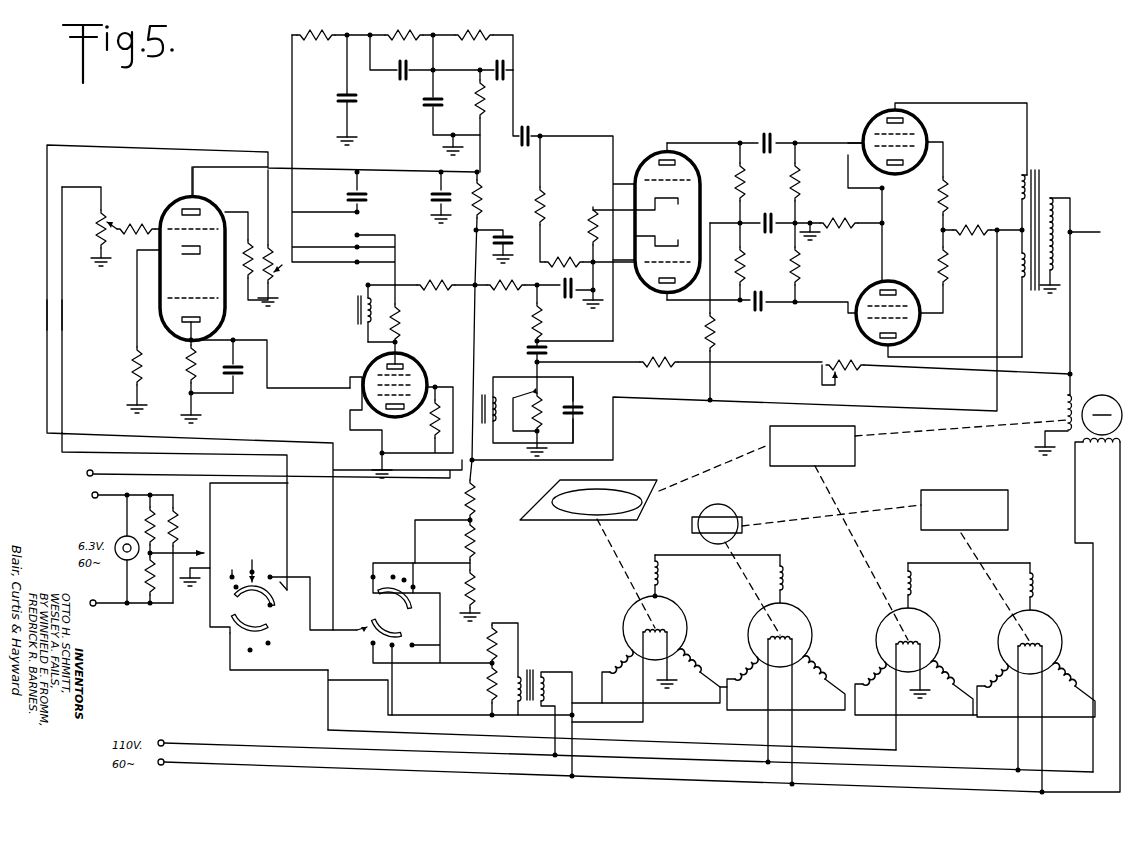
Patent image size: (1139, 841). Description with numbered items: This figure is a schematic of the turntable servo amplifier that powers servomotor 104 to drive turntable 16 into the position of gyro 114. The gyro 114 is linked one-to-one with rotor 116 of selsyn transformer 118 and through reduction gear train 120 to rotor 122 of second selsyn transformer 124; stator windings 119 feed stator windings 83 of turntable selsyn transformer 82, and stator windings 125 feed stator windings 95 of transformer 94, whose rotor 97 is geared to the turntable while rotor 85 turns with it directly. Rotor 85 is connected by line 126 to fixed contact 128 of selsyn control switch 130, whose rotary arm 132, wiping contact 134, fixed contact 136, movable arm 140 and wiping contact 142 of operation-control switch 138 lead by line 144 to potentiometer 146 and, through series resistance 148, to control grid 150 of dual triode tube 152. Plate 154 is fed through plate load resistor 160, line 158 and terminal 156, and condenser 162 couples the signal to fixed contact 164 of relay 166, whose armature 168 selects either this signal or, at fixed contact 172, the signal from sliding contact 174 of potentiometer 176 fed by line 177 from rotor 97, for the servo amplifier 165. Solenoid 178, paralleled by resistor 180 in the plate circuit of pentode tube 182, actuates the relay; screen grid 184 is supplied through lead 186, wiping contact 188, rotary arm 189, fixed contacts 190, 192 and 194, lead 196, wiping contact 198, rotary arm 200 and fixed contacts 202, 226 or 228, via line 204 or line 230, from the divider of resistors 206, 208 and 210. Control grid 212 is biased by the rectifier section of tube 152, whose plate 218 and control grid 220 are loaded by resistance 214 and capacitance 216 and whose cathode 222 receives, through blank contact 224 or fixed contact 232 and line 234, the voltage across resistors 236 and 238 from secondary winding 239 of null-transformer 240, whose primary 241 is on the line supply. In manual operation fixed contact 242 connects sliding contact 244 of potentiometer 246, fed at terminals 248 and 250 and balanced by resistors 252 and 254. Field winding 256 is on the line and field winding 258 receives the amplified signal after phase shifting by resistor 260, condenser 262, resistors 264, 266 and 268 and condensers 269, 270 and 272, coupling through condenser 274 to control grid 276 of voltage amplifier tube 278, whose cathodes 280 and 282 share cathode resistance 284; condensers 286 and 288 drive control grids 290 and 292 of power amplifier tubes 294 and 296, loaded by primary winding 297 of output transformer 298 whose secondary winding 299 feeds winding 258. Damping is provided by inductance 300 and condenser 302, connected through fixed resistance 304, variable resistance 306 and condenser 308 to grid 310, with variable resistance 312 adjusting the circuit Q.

The turntable 16 is at (625, 480).
The 1:1 turntable selsyn transformer 82 is at (670, 604).
The stator windings 83 is at (660, 581).
The rotor 85 is at (668, 631).
The 36:1 turntable selsyn transformer 94 is at (927, 612).
The stator windings 95 is at (913, 584).
The rotor 97 is at (928, 635).
The servomotor 104 is at (1104, 392).
The gyro 114 is at (727, 508).
The rotor 116 is at (795, 633).
The selsyn transformer 118 is at (856, 460).
The stator windings 119 is at (787, 581).
The reduction gear train 120 is at (980, 488).
The rotor 122 is at (1036, 633).
The second selsyn transformer 124 is at (1045, 615).
The stator windings 125 is at (1035, 589).
The line 126 is at (392, 702).
The fixed contact 128 is at (392, 658).
The selsyn control switch 130 is at (375, 595).
The rotary arm 132 is at (402, 630).
The wiping contact 134 is at (370, 626).
The fixed contact 136 is at (261, 578).
The operation-control rotary switch 138 is at (255, 548).
The movable arm 140 is at (270, 605).
The wiping contact 142 is at (278, 588).
The line 144 is at (66, 313).
The potentiometer 146 is at (109, 211).
The series resistance 148 is at (127, 224).
The control grid 150 is at (181, 197).
The dual triode vacuum tube 152 is at (218, 210).
The plate 154 is at (204, 196).
The terminal 156 is at (96, 478).
The line 158 is at (478, 323).
The plate load resistor 160 is at (483, 198).
The condenser 162 is at (370, 196).
The fixed contact 164 is at (395, 247).
The servo amplifier 165 is at (728, 128).
The single-pole double-throw relay 166 is at (406, 252).
The armature 168 is at (414, 197).
The fixed contact 172 is at (399, 262).
The sliding contact 174 is at (280, 258).
The potentiometer 176 is at (282, 280).
The line 177 is at (46, 305).
The solenoid 178 is at (360, 328).
The resistor 180 is at (402, 314).
The pentode vacuum tube 182 is at (412, 358).
The screen grid 184 is at (423, 376).
The lead 186 is at (214, 506).
The wiping contact 188 is at (230, 618).
The rotary arm 189 is at (262, 634).
The fixed contact 190 is at (268, 644).
The fixed contact 192 is at (252, 654).
The fixed contact 194 is at (234, 632).
The lead 196 is at (298, 690).
The wiping contact 198 is at (417, 596).
The rotary arm 200 is at (423, 639).
The fixed contact 202 is at (372, 576).
The line 204 is at (426, 562).
The resistor 206 is at (483, 590).
The resistor 208 is at (481, 546).
The resistor 210 is at (479, 492).
The control grid 212 is at (343, 412).
The resistance 214 is at (155, 376).
The capacitance 216 is at (247, 373).
The plate 218 is at (184, 334).
The control grid 220 is at (226, 310).
The cathode 222 is at (192, 269).
The fixed contact 224 is at (412, 647).
The fixed contact 226 is at (390, 575).
The fixed contact 228 is at (405, 578).
The line 230 is at (426, 518).
The fixed contact 232 is at (373, 646).
The line 234 is at (458, 660).
The resistor 236 is at (498, 625).
The resistor 238 is at (488, 694).
The secondary winding 239 is at (525, 670).
The null-transformer 240 is at (540, 676).
The primary 241 is at (545, 696).
The fixed contact 242 is at (250, 554).
The sliding contact 244 is at (198, 552).
The potentiometer 246 is at (178, 522).
The terminal 248 is at (90, 495).
The terminal 250 is at (97, 605).
The resistor 252 is at (154, 506).
The resistor 254 is at (152, 598).
The field winding 256 is at (1103, 449).
The field winding 258 is at (1062, 403).
The resistor 260 is at (335, 36).
The condenser 262 is at (341, 83).
The resistor 264 is at (412, 27).
The resistor 266 is at (484, 42).
The resistor 268 is at (488, 113).
The condenser 269 is at (410, 80).
The condenser 270 is at (424, 106).
The condenser 272 is at (507, 62).
The condenser 274 is at (526, 131).
The control grid 276 is at (650, 152).
The voltage amplifier tube 278 is at (661, 152).
The cathode 280 is at (690, 188).
The cathode 282 is at (690, 234).
The cathode resistance 284 is at (593, 236).
The condenser 286 is at (774, 134).
The condenser 288 is at (764, 294).
The control grid 290 is at (812, 142).
The control grid 292 is at (814, 296).
The power amplifier tube 294 is at (896, 110).
The power amplifier tube 296 is at (888, 282).
The primary winding 297 is at (1013, 212).
The output transformer 298 is at (1050, 190).
The secondary winding 299 is at (1090, 230).
The inductance 300 is at (492, 425).
The condenser 302 is at (580, 414).
The fixed resistance 304 is at (652, 360).
The variable resistance 306 is at (854, 358).
The condenser 308 is at (530, 350).
The grid 310 is at (660, 292).
The variable resistance 312 is at (548, 400).